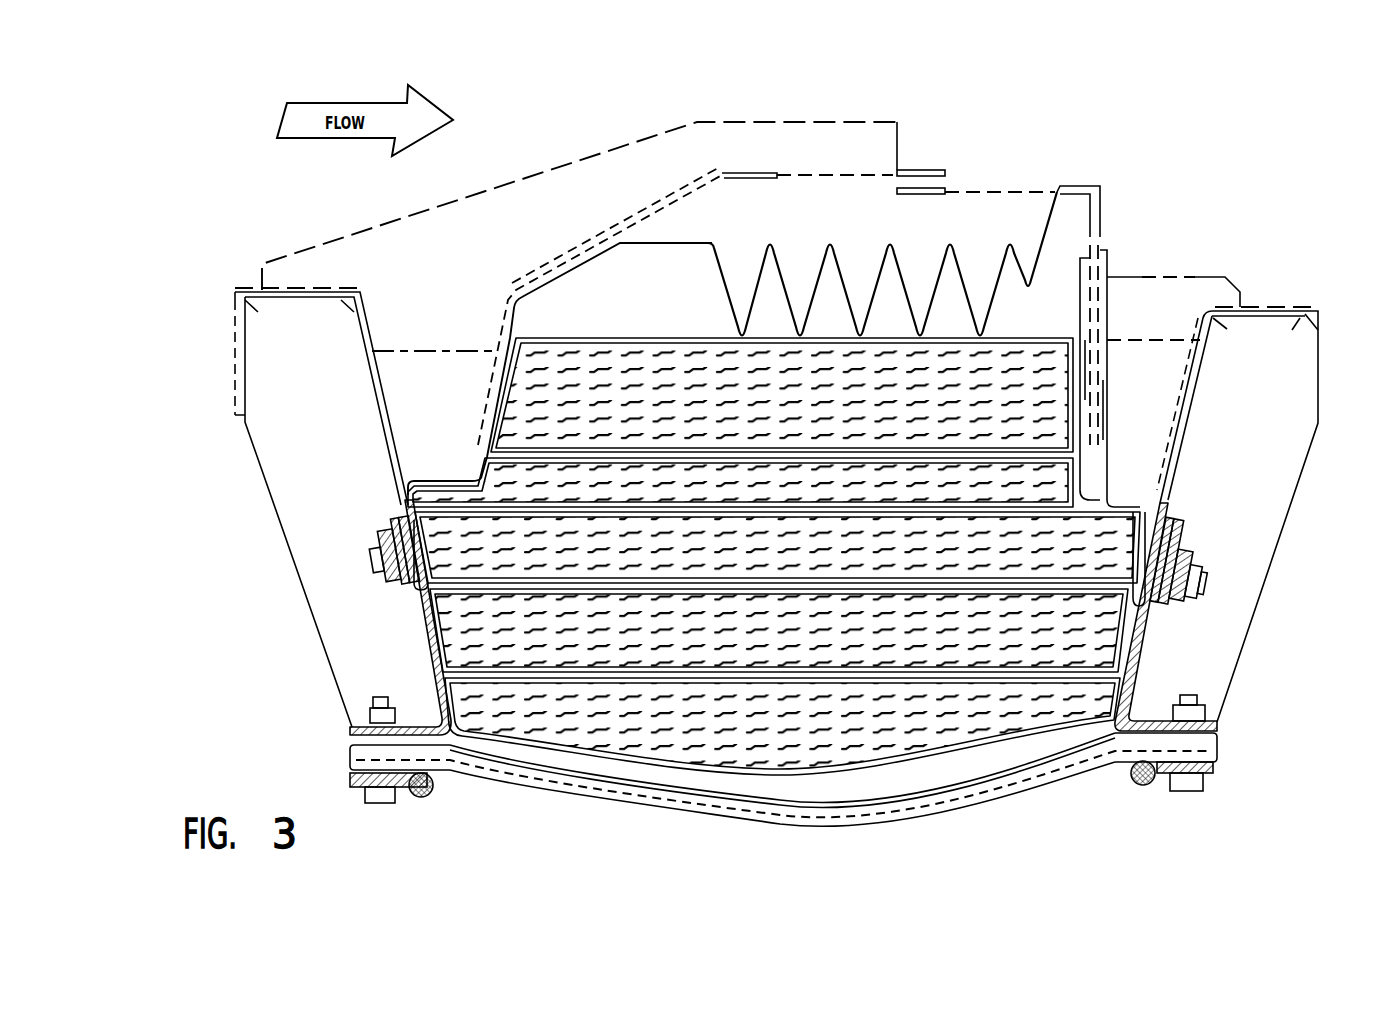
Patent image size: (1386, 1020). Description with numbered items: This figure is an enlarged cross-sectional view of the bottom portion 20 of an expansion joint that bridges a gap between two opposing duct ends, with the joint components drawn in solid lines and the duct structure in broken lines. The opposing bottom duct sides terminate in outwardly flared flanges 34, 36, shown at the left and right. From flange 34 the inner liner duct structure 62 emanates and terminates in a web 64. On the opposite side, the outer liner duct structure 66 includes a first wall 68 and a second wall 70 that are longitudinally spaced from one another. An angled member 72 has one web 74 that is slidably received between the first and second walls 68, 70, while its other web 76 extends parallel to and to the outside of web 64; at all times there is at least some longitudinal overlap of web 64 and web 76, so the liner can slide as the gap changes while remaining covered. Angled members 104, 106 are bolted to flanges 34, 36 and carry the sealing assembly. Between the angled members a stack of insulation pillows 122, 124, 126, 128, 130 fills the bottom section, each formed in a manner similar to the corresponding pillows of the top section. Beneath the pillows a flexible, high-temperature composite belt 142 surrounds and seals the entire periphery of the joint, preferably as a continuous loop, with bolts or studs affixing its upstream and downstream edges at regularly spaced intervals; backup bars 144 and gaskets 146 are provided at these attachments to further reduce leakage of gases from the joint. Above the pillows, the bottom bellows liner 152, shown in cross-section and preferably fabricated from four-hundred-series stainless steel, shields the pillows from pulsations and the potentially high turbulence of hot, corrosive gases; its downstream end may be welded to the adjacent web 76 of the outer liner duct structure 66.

The bottom portion 20 is at (258, 680).
The flange 34 is at (382, 432).
The flange 36 is at (1200, 418).
The inner liner duct structure 62 is at (582, 222).
The web 64 is at (760, 160).
The outer liner duct structure 66 is at (1142, 188).
The first wall 68 is at (1103, 363).
The second wall 70 is at (1097, 396).
The angled member 72 is at (1015, 135).
The web 74 is at (1100, 235).
The web 76 is at (998, 185).
The angled member 104 is at (420, 633).
The angled member 106 is at (1154, 639).
The pillow 122 is at (859, 412).
The pillow 124 is at (859, 492).
The pillow 126 is at (859, 557).
The pillow 128 is at (859, 639).
The pillow 130 is at (859, 735).
The composite belt 142 is at (778, 814).
The backup bar 144 is at (1218, 771).
The gasket 146 is at (1147, 792).
The bottom bellows liner 152 is at (724, 283).